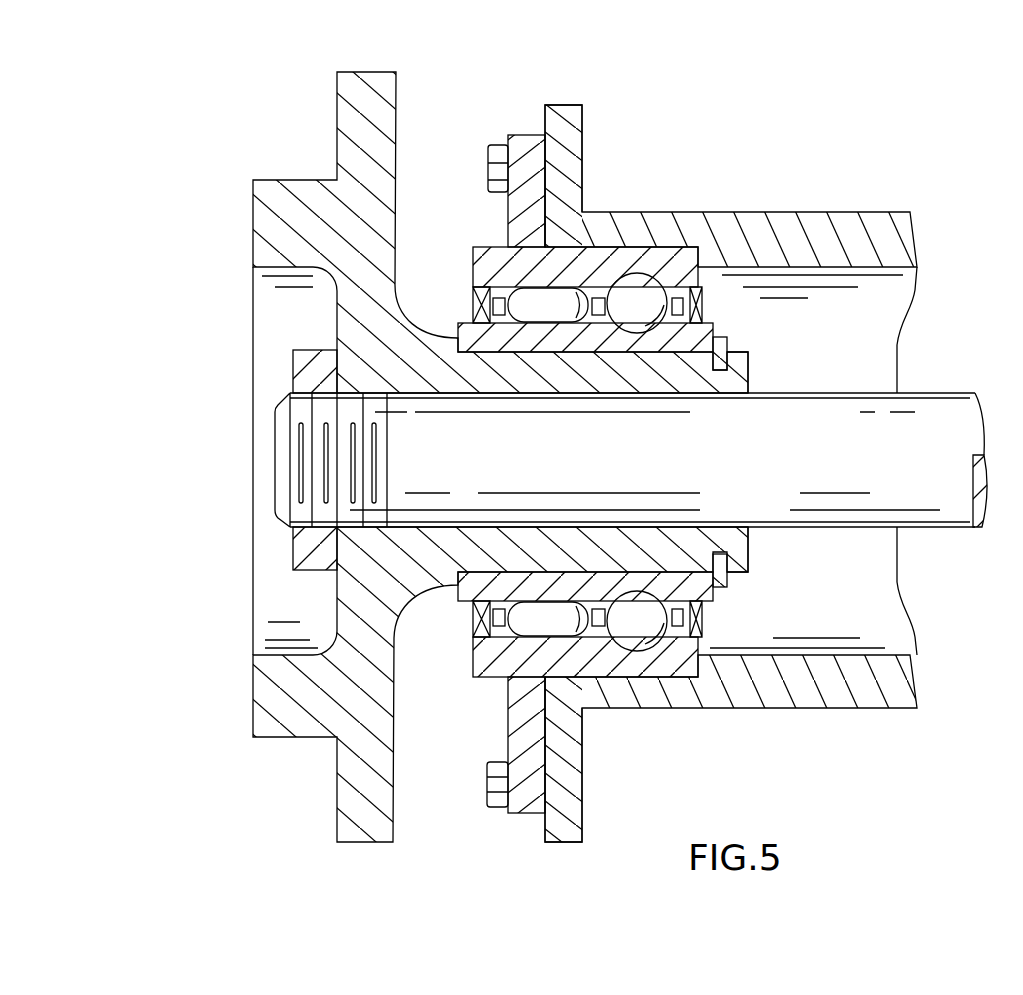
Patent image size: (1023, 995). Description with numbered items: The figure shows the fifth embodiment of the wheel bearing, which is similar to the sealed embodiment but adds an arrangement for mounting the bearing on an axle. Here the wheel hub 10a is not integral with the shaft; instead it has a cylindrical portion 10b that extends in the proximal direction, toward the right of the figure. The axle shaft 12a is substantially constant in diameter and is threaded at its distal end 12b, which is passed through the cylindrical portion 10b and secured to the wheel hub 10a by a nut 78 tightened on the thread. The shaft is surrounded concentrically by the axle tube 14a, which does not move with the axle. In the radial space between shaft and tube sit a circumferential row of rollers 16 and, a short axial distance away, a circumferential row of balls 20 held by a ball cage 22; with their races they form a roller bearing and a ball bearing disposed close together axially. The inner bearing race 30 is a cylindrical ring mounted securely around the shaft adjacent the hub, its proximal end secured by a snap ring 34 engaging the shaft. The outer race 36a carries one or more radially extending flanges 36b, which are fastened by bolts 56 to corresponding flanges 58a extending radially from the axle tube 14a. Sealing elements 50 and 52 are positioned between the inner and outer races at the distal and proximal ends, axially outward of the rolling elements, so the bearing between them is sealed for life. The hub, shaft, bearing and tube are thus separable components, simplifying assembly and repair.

The wheel hub 10a is at (290, 222).
The cylindrical portion 10b is at (750, 378).
The axle shaft 12a is at (935, 392).
The distal end 12b is at (275, 460).
The axle tube 14a is at (773, 232).
The rollers 16 is at (550, 287).
The balls 20 is at (650, 277).
The ball cage 22 is at (602, 297).
The inner bearing race 30 is at (458, 325).
The snap ring 34 is at (725, 585).
The outer race 36a is at (477, 248).
The radially extending flange 36b is at (520, 132).
The sealing element 50 is at (472, 622).
The sealing element 52 is at (702, 617).
The bolt 56 is at (485, 792).
The flange 58a is at (558, 103).
The nut 78 is at (290, 365).